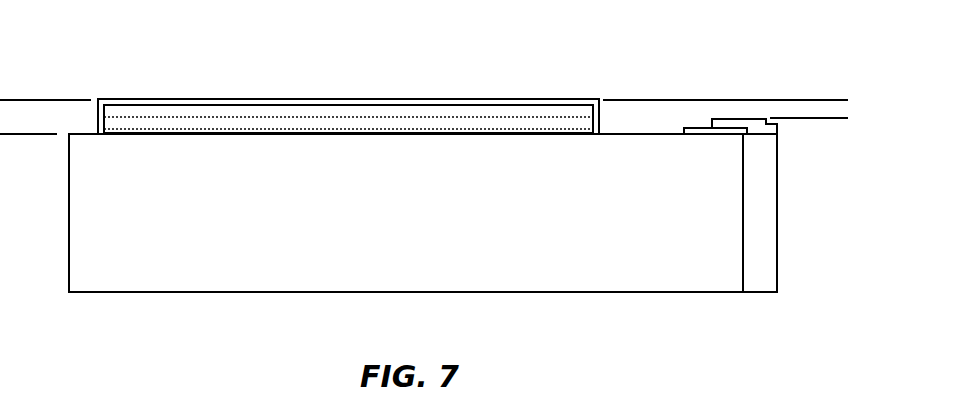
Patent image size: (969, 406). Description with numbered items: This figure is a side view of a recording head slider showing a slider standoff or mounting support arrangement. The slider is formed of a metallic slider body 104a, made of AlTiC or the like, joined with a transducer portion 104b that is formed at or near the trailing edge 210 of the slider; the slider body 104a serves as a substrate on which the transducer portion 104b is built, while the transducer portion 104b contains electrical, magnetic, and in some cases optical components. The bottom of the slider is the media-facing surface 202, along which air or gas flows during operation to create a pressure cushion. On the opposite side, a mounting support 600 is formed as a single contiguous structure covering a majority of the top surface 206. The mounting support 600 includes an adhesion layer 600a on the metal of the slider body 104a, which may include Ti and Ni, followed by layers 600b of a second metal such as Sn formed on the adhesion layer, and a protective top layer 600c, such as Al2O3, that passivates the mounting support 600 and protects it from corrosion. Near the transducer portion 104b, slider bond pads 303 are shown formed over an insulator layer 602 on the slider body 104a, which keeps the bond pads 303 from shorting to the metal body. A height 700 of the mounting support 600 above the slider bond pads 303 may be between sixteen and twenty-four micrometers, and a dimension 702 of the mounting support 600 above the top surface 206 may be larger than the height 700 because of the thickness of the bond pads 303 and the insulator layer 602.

The media-facing surface 202 is at (557, 290).
The slider body 104a is at (293, 280).
The transducer portion 104b is at (754, 282).
The trailing edge 210 is at (777, 200).
The top surface 206 is at (627, 134).
The mounting support 600 is at (300, 102).
The adhesion layer 600a is at (128, 132).
The layers 600b is at (192, 125).
The protective top layer 600c is at (425, 98).
The insulator layer 602 is at (697, 127).
The slider bond pads 303 is at (745, 118).
The height 700 is at (818, 167).
The dimension 702 is at (28, 183).